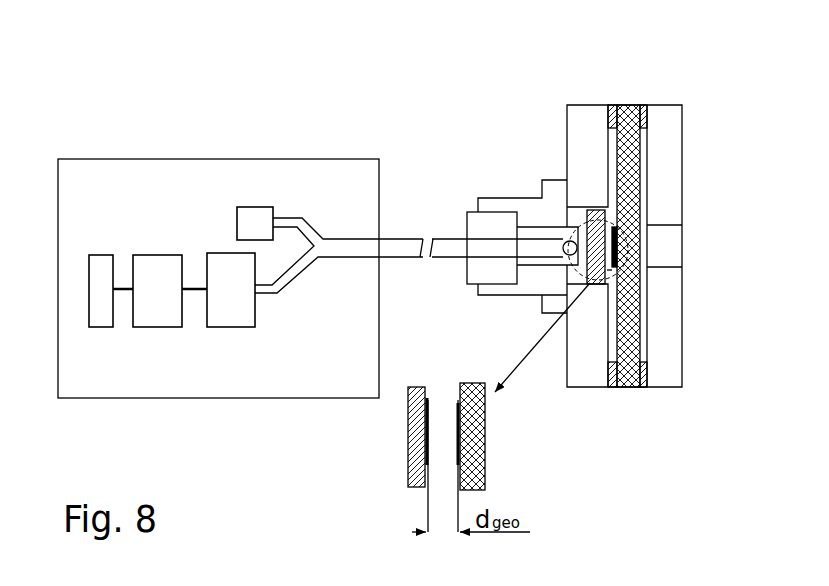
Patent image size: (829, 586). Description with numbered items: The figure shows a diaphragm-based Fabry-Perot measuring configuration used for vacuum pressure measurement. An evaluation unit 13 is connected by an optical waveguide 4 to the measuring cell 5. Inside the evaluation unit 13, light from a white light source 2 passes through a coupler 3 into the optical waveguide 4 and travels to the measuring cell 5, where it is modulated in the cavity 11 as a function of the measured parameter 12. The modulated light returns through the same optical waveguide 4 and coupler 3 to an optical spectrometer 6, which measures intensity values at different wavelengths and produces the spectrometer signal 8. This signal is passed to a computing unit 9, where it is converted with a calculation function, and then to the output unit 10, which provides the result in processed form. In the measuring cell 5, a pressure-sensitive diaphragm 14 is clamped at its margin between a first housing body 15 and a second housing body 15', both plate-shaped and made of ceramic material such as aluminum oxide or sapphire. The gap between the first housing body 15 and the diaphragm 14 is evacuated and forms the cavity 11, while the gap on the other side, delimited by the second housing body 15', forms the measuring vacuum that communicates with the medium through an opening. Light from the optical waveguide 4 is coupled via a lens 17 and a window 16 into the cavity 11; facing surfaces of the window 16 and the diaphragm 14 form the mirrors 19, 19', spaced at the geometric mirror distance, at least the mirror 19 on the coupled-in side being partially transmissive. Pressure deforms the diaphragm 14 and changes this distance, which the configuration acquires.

The white light source 2 is at (258, 205).
The coupler 3 is at (323, 245).
The optical waveguide 4 is at (410, 237).
The measuring cell 5 is at (681, 88).
The optical spectrometer 6 is at (247, 329).
The spectrometer signal 8 is at (196, 292).
The computing unit 9 is at (153, 329).
The output unit 10 is at (95, 329).
The cavity 11 is at (610, 152).
The measured parameter 12 is at (676, 247).
The evaluation unit 13 is at (130, 157).
The diaphragm 14 is at (633, 373).
The first housing body 15 is at (576, 367).
The second housing body 15' is at (691, 358).
The window 16 is at (587, 209).
The lens 17 is at (569, 239).
The partially transmissive mirror 19 is at (408, 435).
The mirror 19' is at (483, 435).